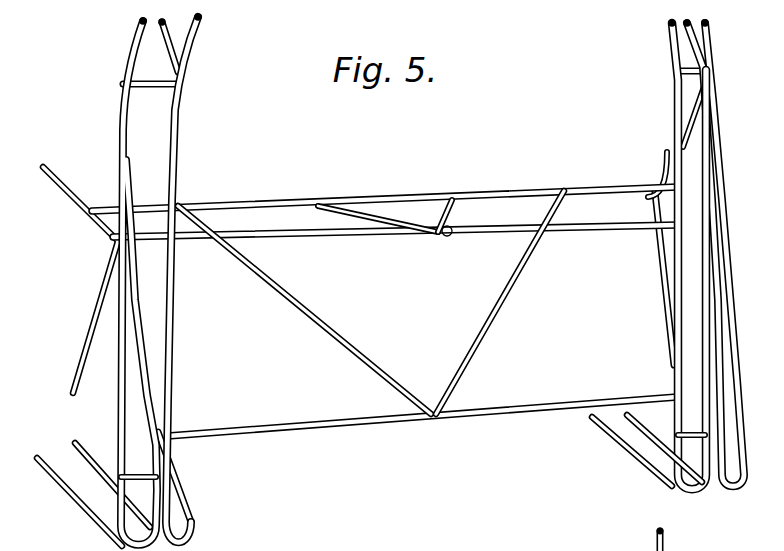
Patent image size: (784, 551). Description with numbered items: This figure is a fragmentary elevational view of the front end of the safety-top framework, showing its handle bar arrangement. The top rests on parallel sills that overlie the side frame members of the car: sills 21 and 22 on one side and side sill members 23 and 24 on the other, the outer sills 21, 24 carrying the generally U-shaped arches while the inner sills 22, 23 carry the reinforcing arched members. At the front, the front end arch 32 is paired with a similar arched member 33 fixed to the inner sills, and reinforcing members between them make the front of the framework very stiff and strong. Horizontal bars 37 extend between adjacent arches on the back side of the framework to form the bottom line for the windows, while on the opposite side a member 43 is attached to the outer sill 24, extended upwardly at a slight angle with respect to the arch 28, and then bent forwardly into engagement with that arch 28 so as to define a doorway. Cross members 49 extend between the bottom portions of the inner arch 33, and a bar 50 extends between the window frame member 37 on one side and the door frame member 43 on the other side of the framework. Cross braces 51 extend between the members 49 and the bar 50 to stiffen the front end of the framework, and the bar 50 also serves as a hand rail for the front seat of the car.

The sill 21 is at (62, 488).
The sill 22 is at (80, 442).
The side sill member 23 is at (623, 445).
The side sill member 24 is at (645, 415).
The arch 28 is at (672, 550).
The front end arch 32 is at (129, 85).
The arched member 33 is at (178, 164).
The horizontal bar 37 is at (56, 172).
The member 43 is at (663, 162).
The cross member 49 is at (356, 239).
The bar 50 is at (408, 197).
The cross brace 51 is at (401, 237).